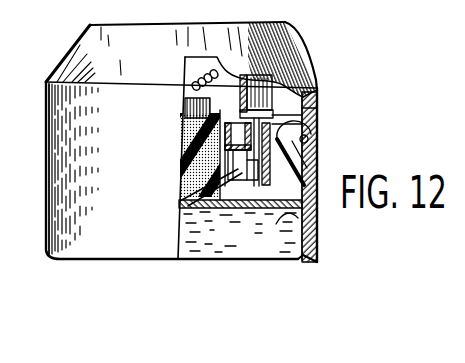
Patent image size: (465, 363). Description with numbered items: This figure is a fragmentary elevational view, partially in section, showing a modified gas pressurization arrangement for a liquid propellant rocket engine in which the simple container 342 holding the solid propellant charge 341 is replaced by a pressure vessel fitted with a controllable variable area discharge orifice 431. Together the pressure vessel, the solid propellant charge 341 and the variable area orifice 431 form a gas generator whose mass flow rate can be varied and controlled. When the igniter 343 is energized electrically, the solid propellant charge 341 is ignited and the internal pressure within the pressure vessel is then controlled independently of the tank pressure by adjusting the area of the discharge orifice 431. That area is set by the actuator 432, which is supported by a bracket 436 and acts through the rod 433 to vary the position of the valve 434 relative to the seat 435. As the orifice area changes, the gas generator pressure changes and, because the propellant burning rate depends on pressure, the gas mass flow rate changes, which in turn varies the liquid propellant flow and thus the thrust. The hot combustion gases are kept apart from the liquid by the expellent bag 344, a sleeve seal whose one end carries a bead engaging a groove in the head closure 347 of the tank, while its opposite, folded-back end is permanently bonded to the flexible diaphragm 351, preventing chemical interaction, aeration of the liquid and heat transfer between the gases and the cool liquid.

The bracket 436 is at (216, 58).
The igniter 343 is at (185, 110).
The solid propellant charge 341 is at (181, 153).
The flexible diaphragm 351 is at (178, 228).
The container 342 is at (254, 212).
The valve 434 is at (276, 207).
The expellent bag 344 is at (296, 253).
The actuator 432 is at (318, 92).
The rod 433 is at (318, 122).
The head closure 347 is at (322, 135).
The seat 435 is at (314, 187).
The variable area discharge orifice 431 is at (317, 223).